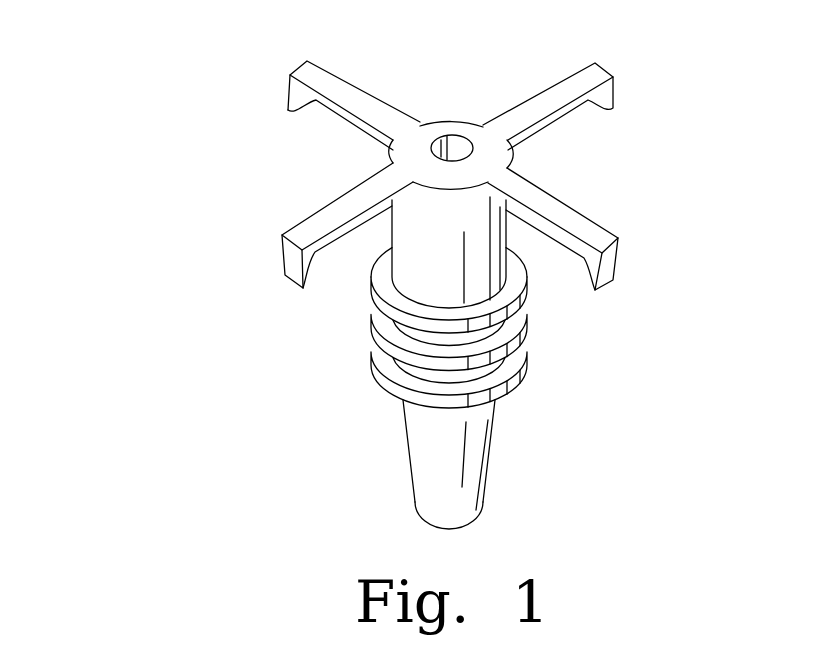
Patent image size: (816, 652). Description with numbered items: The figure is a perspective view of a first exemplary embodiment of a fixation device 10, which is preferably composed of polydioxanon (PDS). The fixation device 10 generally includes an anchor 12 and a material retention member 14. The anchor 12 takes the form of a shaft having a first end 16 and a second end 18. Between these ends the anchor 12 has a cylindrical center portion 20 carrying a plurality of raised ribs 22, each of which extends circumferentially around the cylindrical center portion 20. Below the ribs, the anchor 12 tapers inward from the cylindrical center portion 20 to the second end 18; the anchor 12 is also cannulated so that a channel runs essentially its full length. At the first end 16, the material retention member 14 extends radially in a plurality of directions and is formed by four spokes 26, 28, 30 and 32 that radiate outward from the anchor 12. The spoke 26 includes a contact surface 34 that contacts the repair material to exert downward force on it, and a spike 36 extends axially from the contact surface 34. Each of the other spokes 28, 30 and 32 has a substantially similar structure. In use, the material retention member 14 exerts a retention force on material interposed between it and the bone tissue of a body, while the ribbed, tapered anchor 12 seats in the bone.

The fixation device 10 is at (158, 89).
The anchor 12 is at (505, 443).
The material retention member 14 is at (626, 130).
The first end 16 is at (461, 94).
The second end 18 is at (397, 509).
The cylindrical center portion 20 is at (484, 338).
The raised ribs 22 is at (381, 376).
The spoke 26 is at (348, 83).
The spoke 28 is at (583, 63).
The spoke 30 is at (603, 228).
The spoke 32 is at (280, 236).
The contact surface 34 is at (318, 110).
The spike 36 is at (287, 90).